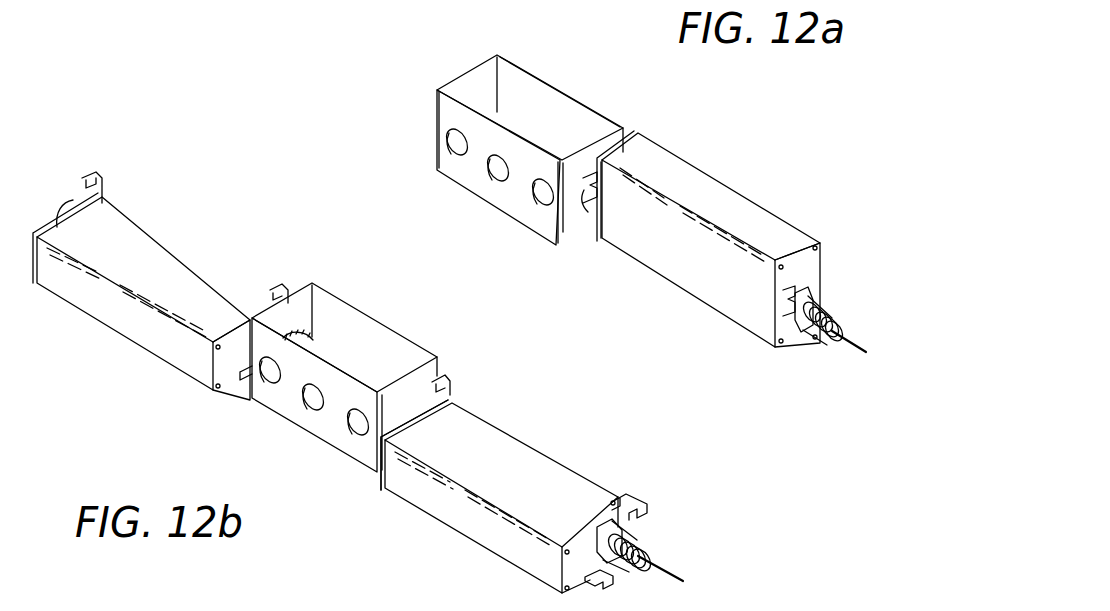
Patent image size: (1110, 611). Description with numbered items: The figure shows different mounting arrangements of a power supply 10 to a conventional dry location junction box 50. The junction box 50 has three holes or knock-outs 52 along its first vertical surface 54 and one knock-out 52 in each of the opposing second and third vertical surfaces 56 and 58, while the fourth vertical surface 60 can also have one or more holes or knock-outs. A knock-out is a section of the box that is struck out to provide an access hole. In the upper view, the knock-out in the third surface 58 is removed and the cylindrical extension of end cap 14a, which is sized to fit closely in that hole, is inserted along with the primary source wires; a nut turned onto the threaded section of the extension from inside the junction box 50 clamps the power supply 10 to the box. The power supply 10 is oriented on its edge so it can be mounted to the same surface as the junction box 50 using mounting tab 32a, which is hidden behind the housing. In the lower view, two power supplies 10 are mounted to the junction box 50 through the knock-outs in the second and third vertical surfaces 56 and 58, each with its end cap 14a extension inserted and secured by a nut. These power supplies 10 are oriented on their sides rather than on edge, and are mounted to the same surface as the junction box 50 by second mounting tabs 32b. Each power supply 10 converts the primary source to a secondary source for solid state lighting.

In FIG. 12a, the power supply 10 is at (757, 193).
In FIG. 12b, the power supply 10 is at (225, 262).
In FIG. 12a, the end cap 14a is at (637, 133).
In FIG. 12b, the end cap 14a is at (382, 488).
In FIG. 12b, the first mounting tab 32a is at (443, 378).
In FIG. 12a, the second mounting tab 32b is at (587, 197).
In FIG. 12a, the junction box 50 is at (437, 120).
In FIG. 12b, the junction box 50 is at (378, 320).
In FIG. 12a, the knock-outs 52 is at (493, 172).
In FIG. 12b, the knock-outs 52 is at (310, 398).
In FIG. 12a, the first vertical surface 54 is at (437, 150).
In FIG. 12a, the second vertical surface 56 is at (572, 233).
In FIG. 12a, the third vertical surface 58 is at (465, 73).
In FIG. 12a, the fourth vertical surface 60 is at (563, 93).